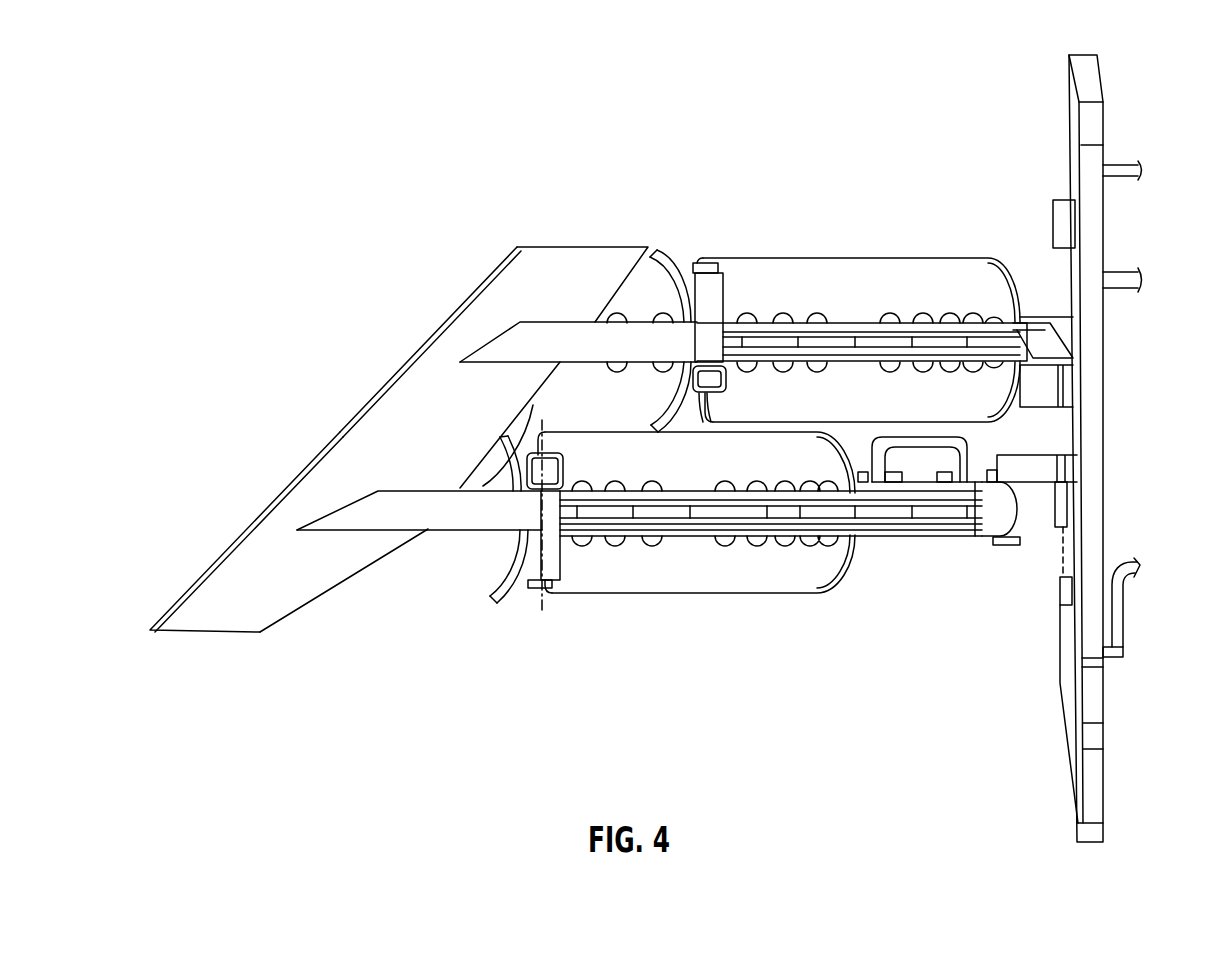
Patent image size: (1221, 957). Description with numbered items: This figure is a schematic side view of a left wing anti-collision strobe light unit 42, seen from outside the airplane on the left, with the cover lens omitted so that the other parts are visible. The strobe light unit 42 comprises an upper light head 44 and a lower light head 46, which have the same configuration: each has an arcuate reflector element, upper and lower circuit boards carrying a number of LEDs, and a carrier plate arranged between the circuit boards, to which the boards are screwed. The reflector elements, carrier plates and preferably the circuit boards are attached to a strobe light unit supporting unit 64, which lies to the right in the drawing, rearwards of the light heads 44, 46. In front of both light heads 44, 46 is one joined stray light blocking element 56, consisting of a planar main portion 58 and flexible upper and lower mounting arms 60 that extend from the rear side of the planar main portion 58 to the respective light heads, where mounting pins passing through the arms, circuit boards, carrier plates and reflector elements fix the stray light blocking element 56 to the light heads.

The left wing anti-collision strobe light unit 42 is at (285, 266).
The upper light head 44 is at (749, 238).
The lower light head 46 is at (645, 615).
The stray light blocking element 56 is at (451, 277).
The planar main portion 58 is at (222, 583).
The upper and lower mounting arms 60 is at (493, 337).
The strobe light unit supporting unit 64 is at (1095, 368).